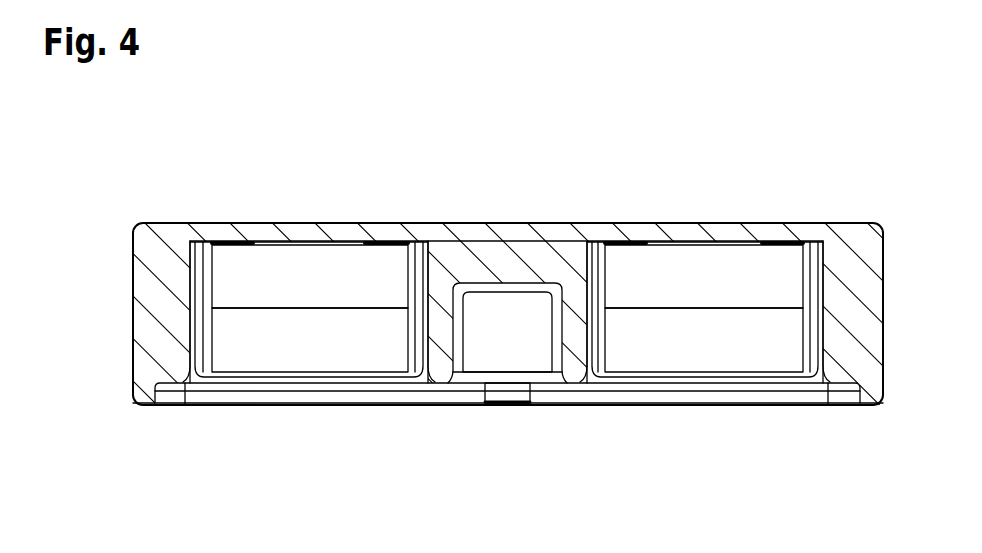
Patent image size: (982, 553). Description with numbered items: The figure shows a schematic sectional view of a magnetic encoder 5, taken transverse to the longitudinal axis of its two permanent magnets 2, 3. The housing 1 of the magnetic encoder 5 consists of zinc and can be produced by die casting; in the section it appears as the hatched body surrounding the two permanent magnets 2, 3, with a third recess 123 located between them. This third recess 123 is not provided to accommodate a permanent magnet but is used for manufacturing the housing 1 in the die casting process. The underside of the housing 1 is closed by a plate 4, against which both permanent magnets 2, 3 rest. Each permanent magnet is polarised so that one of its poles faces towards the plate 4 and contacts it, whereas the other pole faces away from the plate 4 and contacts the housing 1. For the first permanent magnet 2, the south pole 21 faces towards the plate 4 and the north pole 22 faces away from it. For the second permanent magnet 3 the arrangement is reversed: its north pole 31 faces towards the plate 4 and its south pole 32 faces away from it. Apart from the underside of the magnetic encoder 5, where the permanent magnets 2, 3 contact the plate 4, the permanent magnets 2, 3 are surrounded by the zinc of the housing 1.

The magnetic encoder 5 is at (150, 167).
The housing 1 is at (503, 256).
The third recess 123 is at (505, 358).
The first permanent magnet 2 is at (309, 306).
The south pole 21 is at (263, 358).
The north pole 22 is at (263, 255).
The second permanent magnet 3 is at (705, 306).
The north pole 31 is at (686, 358).
The south pole 32 is at (661, 256).
The plate 4 is at (369, 398).